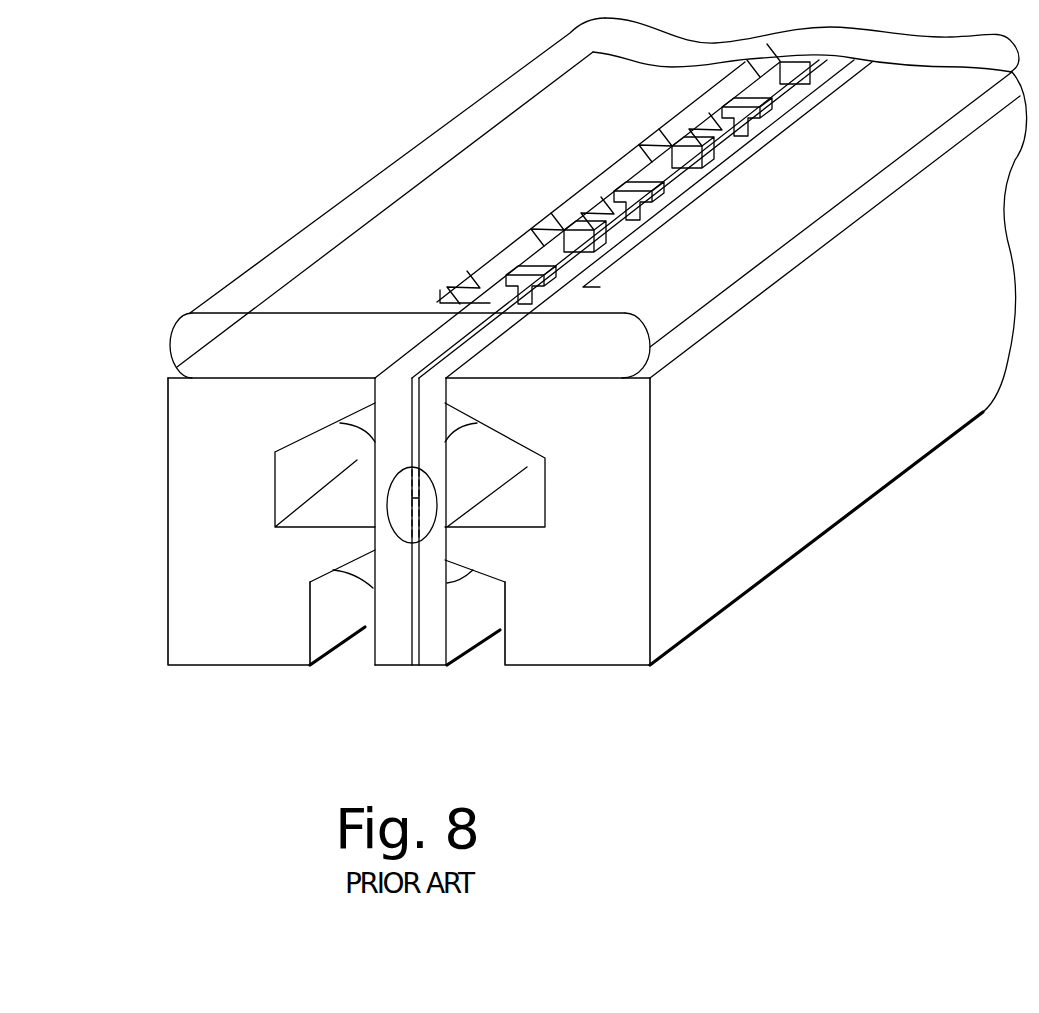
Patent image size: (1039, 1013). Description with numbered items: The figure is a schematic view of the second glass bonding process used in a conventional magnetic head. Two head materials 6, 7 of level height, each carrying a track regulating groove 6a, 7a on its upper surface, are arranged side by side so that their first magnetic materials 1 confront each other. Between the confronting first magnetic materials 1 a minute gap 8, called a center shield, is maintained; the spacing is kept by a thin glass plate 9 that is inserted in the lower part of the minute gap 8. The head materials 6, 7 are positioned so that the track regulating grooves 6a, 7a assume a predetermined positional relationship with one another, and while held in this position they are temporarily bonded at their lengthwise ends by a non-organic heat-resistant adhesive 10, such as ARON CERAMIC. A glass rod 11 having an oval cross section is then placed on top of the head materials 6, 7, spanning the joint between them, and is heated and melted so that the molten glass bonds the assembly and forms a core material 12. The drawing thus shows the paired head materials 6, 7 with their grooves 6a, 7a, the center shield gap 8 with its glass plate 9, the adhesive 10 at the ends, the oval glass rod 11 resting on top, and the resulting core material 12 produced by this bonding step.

The first magnetic materials 1 is at (385, 648).
The head material 6 is at (228, 637).
The track regulating groove 6a is at (597, 192).
The head material 7 is at (580, 642).
The track regulating groove 7a is at (632, 228).
The minute gap 8 is at (415, 395).
The thin glass plate 9 is at (415, 608).
The non-organic heat-resistant adhesive 10 is at (392, 532).
The glass rod 11 is at (272, 270).
The core material 12 is at (743, 597).